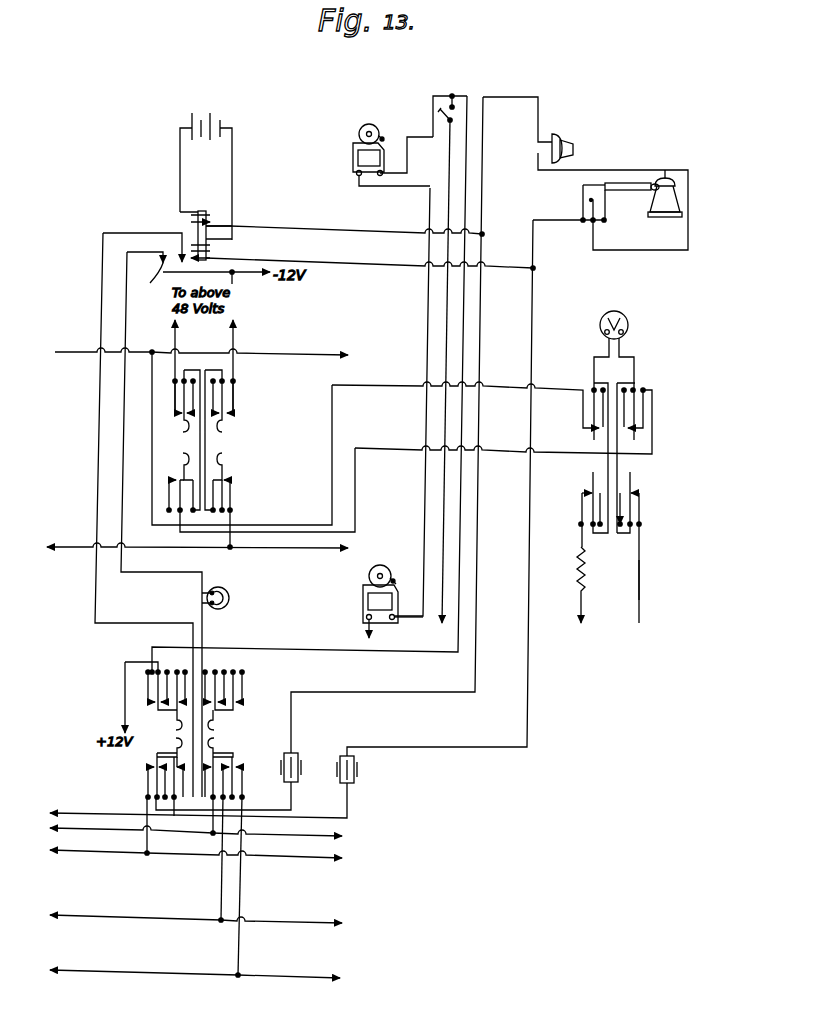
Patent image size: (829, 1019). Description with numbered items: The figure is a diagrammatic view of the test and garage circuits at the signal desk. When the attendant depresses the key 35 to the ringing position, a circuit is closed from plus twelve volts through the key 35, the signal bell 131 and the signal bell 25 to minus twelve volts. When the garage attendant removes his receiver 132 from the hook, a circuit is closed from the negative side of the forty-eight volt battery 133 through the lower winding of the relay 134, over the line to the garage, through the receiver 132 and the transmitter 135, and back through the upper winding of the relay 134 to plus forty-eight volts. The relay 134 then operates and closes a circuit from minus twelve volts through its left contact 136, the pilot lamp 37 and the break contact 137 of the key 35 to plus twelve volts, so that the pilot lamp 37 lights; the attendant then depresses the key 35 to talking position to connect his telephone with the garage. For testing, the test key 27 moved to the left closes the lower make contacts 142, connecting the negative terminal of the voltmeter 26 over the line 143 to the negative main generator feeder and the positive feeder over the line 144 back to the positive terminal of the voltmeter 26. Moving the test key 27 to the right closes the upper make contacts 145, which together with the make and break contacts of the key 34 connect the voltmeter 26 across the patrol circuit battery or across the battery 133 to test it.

The signal bell 131 is at (372, 123).
The 48-volt battery 133 is at (180, 159).
The relay 134 is at (198, 231).
The left contact 136 is at (150, 283).
The transmitter 135 is at (573, 148).
The receiver 132 is at (678, 209).
The voltmeter 26 is at (630, 322).
The test key 27 is at (624, 503).
The upper make contacts 145 is at (586, 434).
The lower make contacts 142 is at (588, 492).
The line 143 is at (586, 614).
The line 144 is at (642, 594).
The key 34 is at (262, 395).
The pilot lamp 37 is at (231, 604).
The signal bell 25 is at (369, 577).
The key 35 is at (136, 734).
The break contact 137 is at (178, 742).